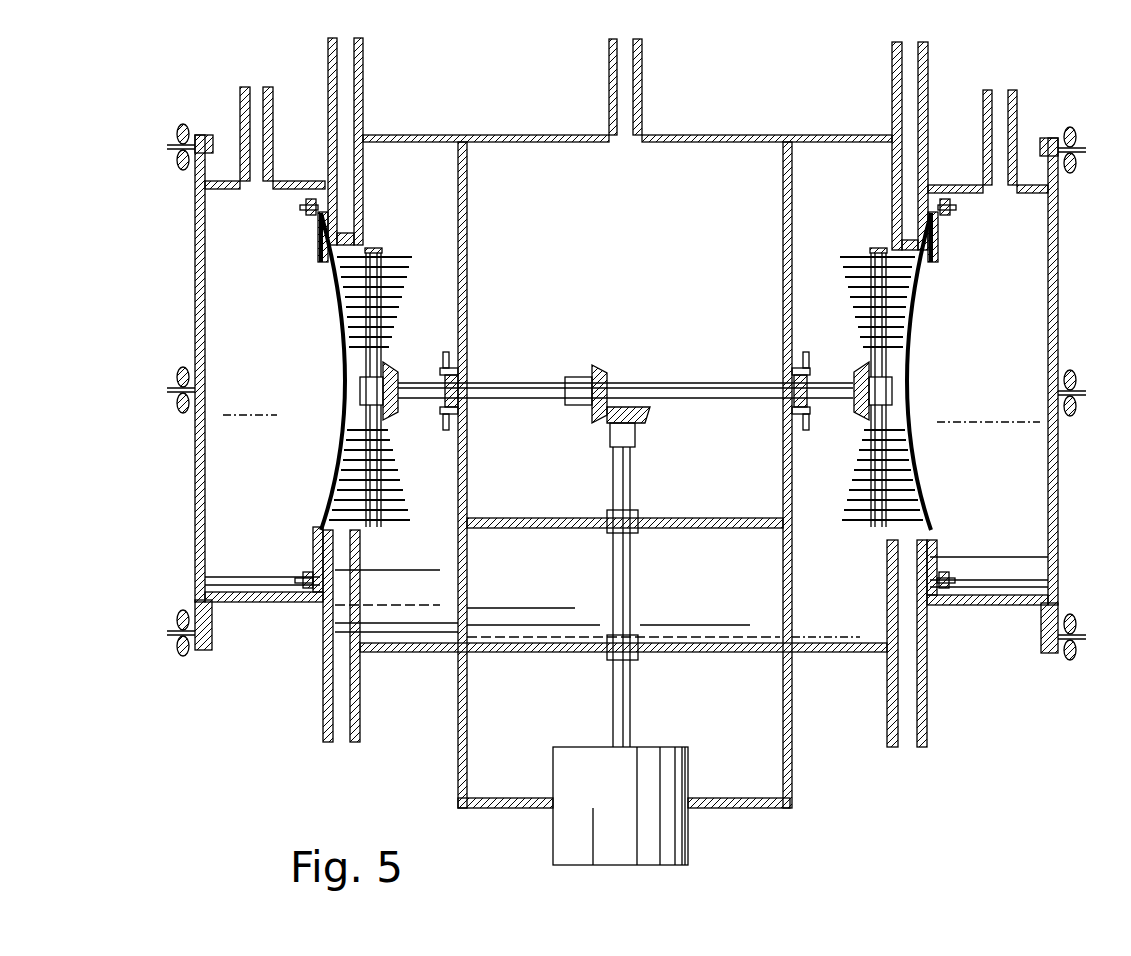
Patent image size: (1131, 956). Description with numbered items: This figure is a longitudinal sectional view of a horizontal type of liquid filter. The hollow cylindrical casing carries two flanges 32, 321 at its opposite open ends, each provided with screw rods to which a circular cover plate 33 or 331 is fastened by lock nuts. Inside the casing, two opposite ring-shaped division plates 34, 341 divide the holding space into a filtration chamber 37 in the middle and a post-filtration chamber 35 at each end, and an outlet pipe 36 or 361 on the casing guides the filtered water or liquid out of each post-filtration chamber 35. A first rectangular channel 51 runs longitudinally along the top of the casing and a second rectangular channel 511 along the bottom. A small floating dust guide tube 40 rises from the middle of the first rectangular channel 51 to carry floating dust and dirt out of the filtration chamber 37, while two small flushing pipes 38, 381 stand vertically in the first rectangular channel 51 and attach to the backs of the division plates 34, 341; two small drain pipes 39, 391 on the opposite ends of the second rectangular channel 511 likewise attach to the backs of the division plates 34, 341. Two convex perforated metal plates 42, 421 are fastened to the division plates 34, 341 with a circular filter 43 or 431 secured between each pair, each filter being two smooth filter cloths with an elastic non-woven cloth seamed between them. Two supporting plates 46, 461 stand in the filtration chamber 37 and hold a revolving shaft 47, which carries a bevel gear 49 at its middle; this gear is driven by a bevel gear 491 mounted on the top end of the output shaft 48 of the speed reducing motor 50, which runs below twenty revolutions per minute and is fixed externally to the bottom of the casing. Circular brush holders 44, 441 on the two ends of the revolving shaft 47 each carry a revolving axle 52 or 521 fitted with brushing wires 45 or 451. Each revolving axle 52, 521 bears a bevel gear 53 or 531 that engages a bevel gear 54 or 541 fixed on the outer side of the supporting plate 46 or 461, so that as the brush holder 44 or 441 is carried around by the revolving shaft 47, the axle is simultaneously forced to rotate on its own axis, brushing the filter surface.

The flange 32 is at (208, 136).
The flange 321 is at (1048, 140).
The circular cover plate 33 is at (196, 191).
The circular cover plate 331 is at (1060, 201).
The ring-shaped division plate 34 is at (335, 192).
The ring-shaped division plate 341 is at (912, 235).
The post-filtration chamber 35 is at (237, 263).
The outlet pipe 36 is at (258, 95).
The outlet pipe 361 is at (1000, 92).
The filtration chamber 37 is at (676, 195).
The small flushing pipe 38 is at (364, 55).
The small flushing pipe 381 is at (922, 60).
The small drain pipe 39 is at (338, 745).
The small drain pipe 391 is at (906, 747).
The small floating dust guide tube 40 is at (641, 45).
The convex perforated metal plate 42 is at (333, 310).
The convex perforated metal plate 421 is at (920, 478).
The circular filter 43 is at (318, 238).
The circular filter 431 is at (930, 233).
The circular brush holder 44 is at (323, 535).
The circular brush holder 441 is at (932, 535).
The brushing wires 45 is at (335, 482).
The brushing wires 451 is at (845, 255).
The supporting plate 46 is at (468, 185).
The supporting plate 461 is at (792, 195).
The revolving shaft 47 is at (504, 380).
The output shaft 48 is at (622, 688).
The bevel gear 49 is at (590, 372).
The bevel gear 491 is at (640, 415).
The speed reducing motor 50 is at (675, 848).
The first rectangular channel 51 is at (433, 135).
The second rectangular channel 511 is at (412, 655).
The revolving axle 52 is at (333, 495).
The revolving axle 521 is at (925, 498).
The bevel gear 53 is at (343, 413).
The bevel gear 531 is at (905, 425).
The bevel gear 54 is at (350, 368).
The bevel gear 541 is at (905, 366).